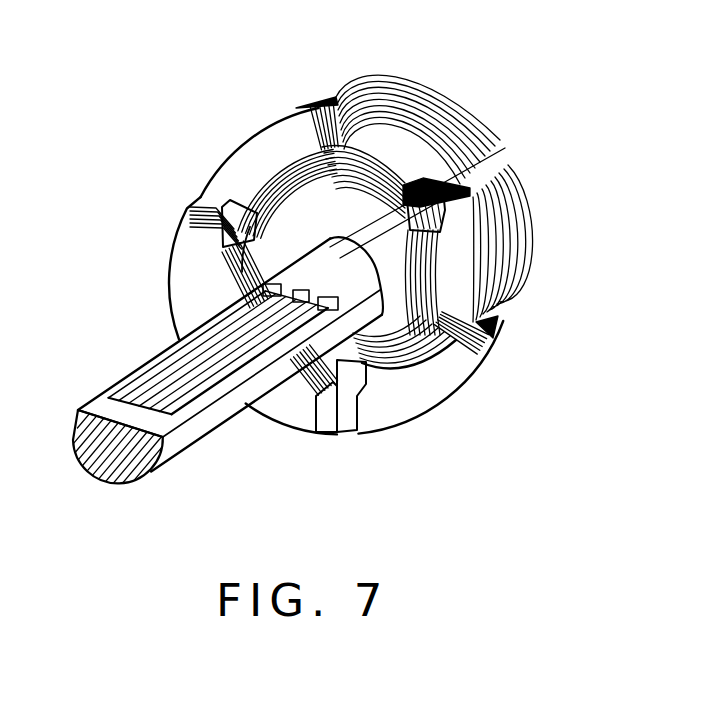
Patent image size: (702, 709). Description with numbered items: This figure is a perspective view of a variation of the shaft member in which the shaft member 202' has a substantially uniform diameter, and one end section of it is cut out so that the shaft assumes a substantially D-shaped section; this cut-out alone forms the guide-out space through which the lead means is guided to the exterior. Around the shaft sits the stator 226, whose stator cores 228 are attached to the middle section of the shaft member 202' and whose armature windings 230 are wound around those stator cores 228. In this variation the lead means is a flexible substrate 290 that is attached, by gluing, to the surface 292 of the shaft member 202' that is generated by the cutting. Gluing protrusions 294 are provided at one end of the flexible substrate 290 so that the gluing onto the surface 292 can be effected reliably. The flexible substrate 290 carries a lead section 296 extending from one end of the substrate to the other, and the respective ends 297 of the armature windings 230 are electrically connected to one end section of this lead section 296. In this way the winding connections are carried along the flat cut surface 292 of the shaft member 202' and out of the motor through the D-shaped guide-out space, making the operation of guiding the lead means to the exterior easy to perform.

The shaft member 202' is at (230, 371).
The stator 226 is at (511, 319).
The stator cores 228 is at (427, 380).
The armature windings 230 is at (505, 148).
The flexible substrate 290 is at (150, 358).
The surface 292 is at (103, 407).
The gluing protrusions 294 is at (235, 283).
The lead section 296 is at (250, 337).
The ends of the armature windings 297 is at (368, 240).